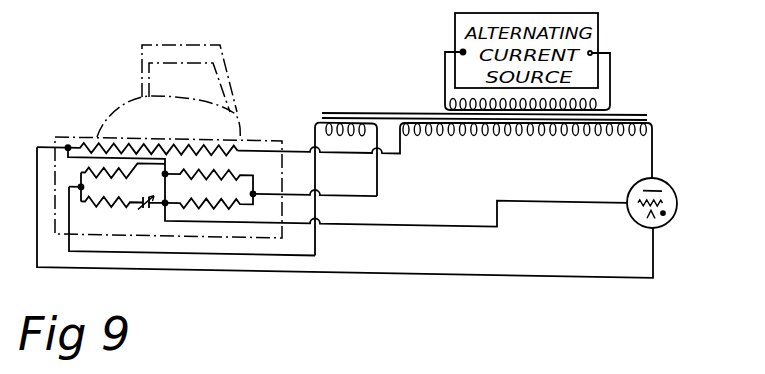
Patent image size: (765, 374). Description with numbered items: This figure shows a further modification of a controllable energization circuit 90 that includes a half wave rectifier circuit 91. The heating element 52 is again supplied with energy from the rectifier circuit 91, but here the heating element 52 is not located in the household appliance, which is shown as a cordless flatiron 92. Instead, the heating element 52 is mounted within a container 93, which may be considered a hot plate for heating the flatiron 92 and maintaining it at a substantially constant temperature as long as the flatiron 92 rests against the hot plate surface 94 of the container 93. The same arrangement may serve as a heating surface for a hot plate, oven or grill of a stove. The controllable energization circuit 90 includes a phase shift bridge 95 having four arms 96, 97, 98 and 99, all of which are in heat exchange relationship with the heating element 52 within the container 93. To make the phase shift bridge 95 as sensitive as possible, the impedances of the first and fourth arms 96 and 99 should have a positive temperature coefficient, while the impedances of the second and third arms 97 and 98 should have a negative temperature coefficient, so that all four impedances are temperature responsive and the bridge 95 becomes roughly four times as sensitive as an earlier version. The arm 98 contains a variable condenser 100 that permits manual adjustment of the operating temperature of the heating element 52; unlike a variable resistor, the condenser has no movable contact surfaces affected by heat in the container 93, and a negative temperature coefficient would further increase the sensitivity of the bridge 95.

The heating element 52 is at (238, 143).
The controllable energization circuit 90 is at (610, 248).
The half wave rectifier circuit 91 is at (702, 188).
The cordless flatiron 92 is at (229, 118).
The container 93 is at (55, 138).
The hot plate surface 94 is at (69, 145).
The phase shift bridge 95 is at (82, 172).
The first arm 96 is at (130, 177).
The second arm 97 is at (231, 173).
The third arm 98 is at (121, 207).
The fourth arm 99 is at (229, 207).
The variable condenser 100 is at (154, 194).